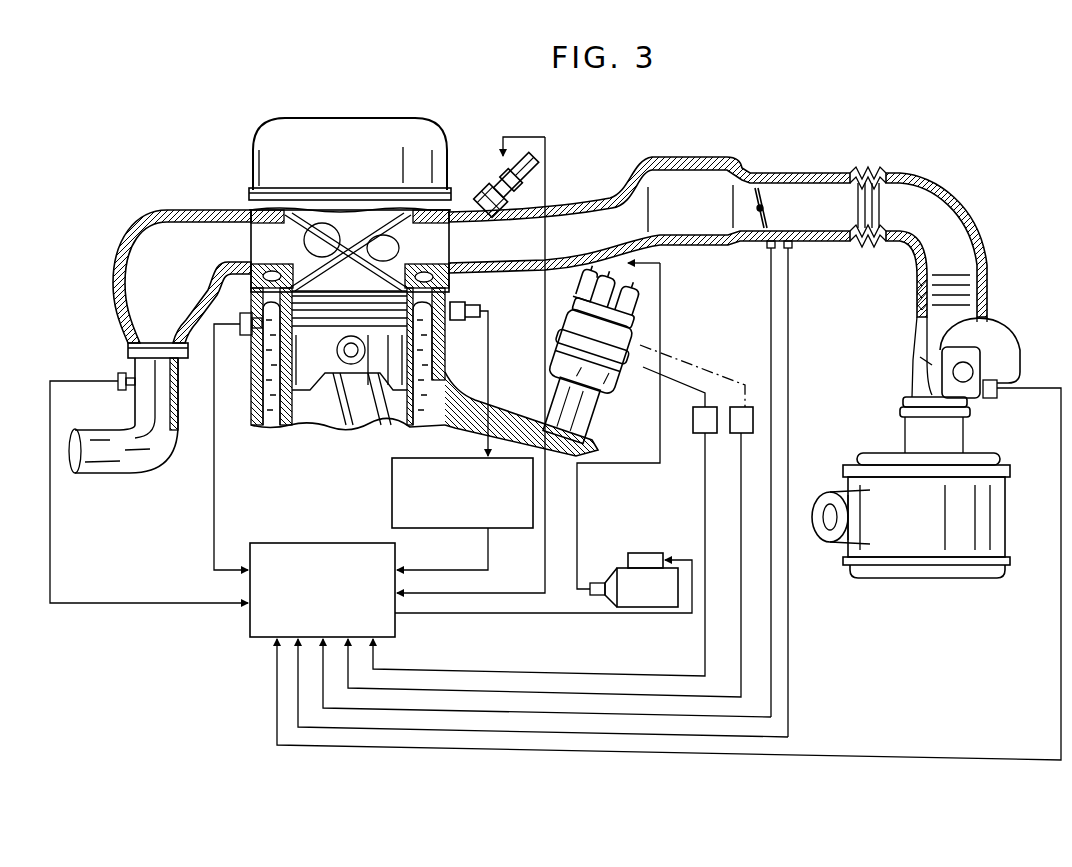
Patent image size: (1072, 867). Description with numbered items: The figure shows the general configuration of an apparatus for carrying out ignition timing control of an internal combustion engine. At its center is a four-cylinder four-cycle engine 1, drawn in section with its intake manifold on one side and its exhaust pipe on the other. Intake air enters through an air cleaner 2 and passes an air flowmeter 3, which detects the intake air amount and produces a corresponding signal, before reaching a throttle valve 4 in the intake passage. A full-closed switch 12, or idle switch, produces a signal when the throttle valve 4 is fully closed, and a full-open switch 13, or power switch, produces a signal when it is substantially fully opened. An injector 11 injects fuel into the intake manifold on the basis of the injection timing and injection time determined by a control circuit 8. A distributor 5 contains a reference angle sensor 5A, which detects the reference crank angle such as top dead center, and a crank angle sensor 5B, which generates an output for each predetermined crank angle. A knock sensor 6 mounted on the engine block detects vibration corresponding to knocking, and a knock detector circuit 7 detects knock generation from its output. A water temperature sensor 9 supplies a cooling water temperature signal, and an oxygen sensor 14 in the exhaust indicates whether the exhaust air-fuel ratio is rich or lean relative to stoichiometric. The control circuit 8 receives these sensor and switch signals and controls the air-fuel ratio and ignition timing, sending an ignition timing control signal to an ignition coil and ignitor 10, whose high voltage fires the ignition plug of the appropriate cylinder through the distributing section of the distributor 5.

The four-cylinder four-cycle engine 1 is at (420, 125).
The air cleaner 2 is at (1005, 535).
The air flowmeter 3 is at (1008, 351).
The throttle valve 4 is at (760, 200).
The distributor 5 is at (645, 298).
The reference angle sensor 5A is at (692, 436).
The crank angle sensor 5B is at (752, 398).
The knock sensor 6 is at (481, 305).
The knock detector circuit 7 is at (392, 462).
The control circuit 8 is at (283, 543).
The water temperature sensor 9 is at (240, 336).
The ignition coil and ignitor 10 is at (628, 556).
The injector 11 is at (490, 191).
The full-closed switch (idle switch) 12 is at (772, 250).
The full-open switch (power switch) 13 is at (791, 250).
The oxygen sensor 14 is at (118, 375).